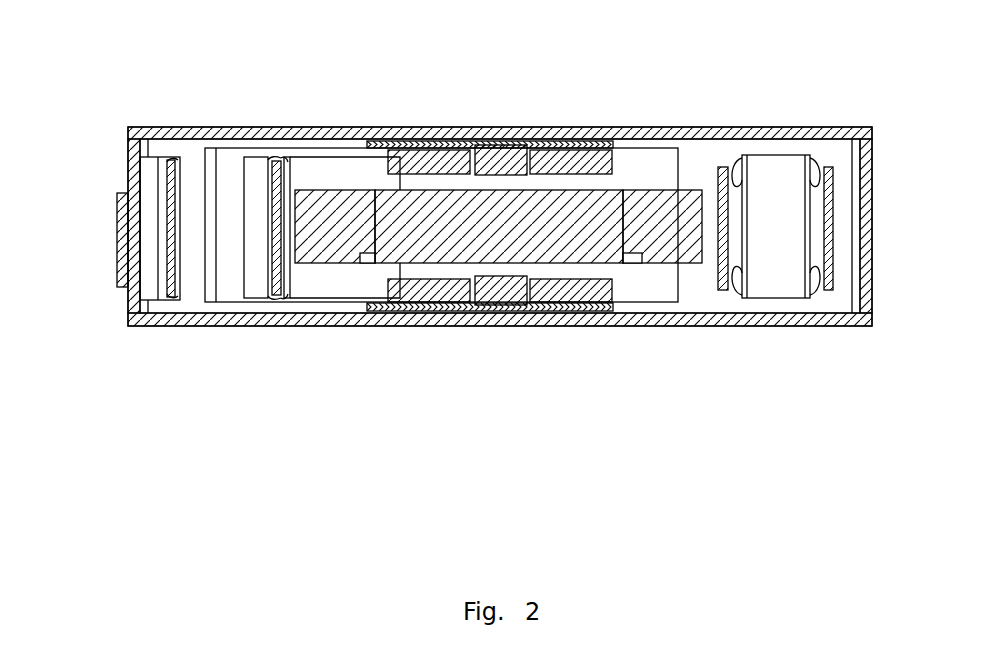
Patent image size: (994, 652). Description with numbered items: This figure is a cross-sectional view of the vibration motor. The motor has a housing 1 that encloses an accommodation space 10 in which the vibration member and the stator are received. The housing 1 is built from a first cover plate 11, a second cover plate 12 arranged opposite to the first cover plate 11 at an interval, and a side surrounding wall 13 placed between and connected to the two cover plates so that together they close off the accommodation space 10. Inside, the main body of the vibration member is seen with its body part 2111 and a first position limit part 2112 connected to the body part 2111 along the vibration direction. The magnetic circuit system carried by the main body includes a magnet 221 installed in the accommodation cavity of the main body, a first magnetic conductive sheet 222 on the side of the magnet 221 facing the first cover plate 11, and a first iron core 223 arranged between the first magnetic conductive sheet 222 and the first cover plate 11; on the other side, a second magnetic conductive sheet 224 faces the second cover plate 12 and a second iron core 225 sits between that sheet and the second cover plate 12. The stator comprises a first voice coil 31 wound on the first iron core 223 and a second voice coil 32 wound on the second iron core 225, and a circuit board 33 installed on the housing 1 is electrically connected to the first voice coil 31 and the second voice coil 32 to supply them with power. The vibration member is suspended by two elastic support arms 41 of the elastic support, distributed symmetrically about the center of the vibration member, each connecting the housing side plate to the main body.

The housing 1 is at (843, 127).
The accommodation space 10 is at (713, 302).
The first cover plate 11 is at (757, 132).
The second cover plate 12 is at (785, 322).
The side surrounding wall 13 is at (873, 217).
The first voice coil 31 is at (431, 147).
The second voice coil 32 is at (442, 310).
The circuit board 33 is at (127, 230).
The elastic support arm 41 is at (167, 185).
The magnet 221 is at (553, 190).
The first magnetic conductive sheet 222 is at (468, 152).
The first iron core 223 is at (497, 150).
The second magnetic conductive sheet 224 is at (567, 308).
The second iron core 225 is at (487, 313).
The body part 2111 is at (617, 198).
The first position limit part 2112 is at (325, 202).